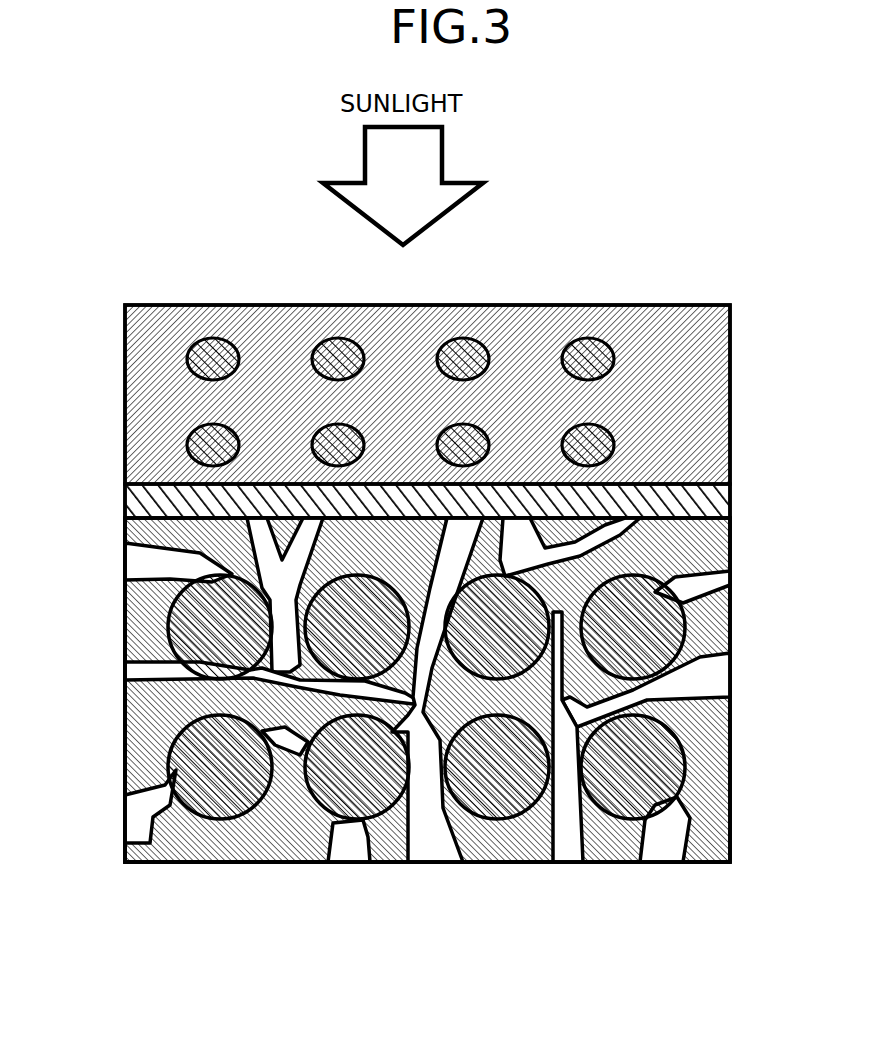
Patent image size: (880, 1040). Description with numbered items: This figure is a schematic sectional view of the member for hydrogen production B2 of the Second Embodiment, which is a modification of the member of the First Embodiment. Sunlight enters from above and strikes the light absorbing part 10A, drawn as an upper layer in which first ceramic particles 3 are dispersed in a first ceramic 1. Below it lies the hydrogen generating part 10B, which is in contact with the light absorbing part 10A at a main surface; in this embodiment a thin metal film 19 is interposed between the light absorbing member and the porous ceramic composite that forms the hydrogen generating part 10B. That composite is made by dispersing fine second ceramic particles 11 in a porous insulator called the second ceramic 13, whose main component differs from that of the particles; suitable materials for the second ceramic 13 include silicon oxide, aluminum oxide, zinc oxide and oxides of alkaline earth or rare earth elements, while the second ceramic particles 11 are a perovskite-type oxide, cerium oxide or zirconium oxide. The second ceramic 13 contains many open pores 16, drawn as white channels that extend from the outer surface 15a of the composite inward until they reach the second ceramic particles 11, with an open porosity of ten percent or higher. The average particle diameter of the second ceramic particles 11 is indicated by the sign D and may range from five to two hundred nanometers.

The first ceramic 1 is at (523, 337).
The first ceramic particles 3 is at (222, 355).
The metal film 19 is at (128, 505).
The light absorbing part 10A is at (750, 303).
The hydrogen generating part 10B is at (449, 742).
The second ceramic particles 11 is at (170, 634).
The second ceramic 13 is at (148, 722).
The outer surface of the porous ceramic composite 15a is at (125, 622).
The open pores 16 is at (143, 807).
The member for hydrogen production B2 is at (699, 246).
The average particle diameter D is at (168, 863).